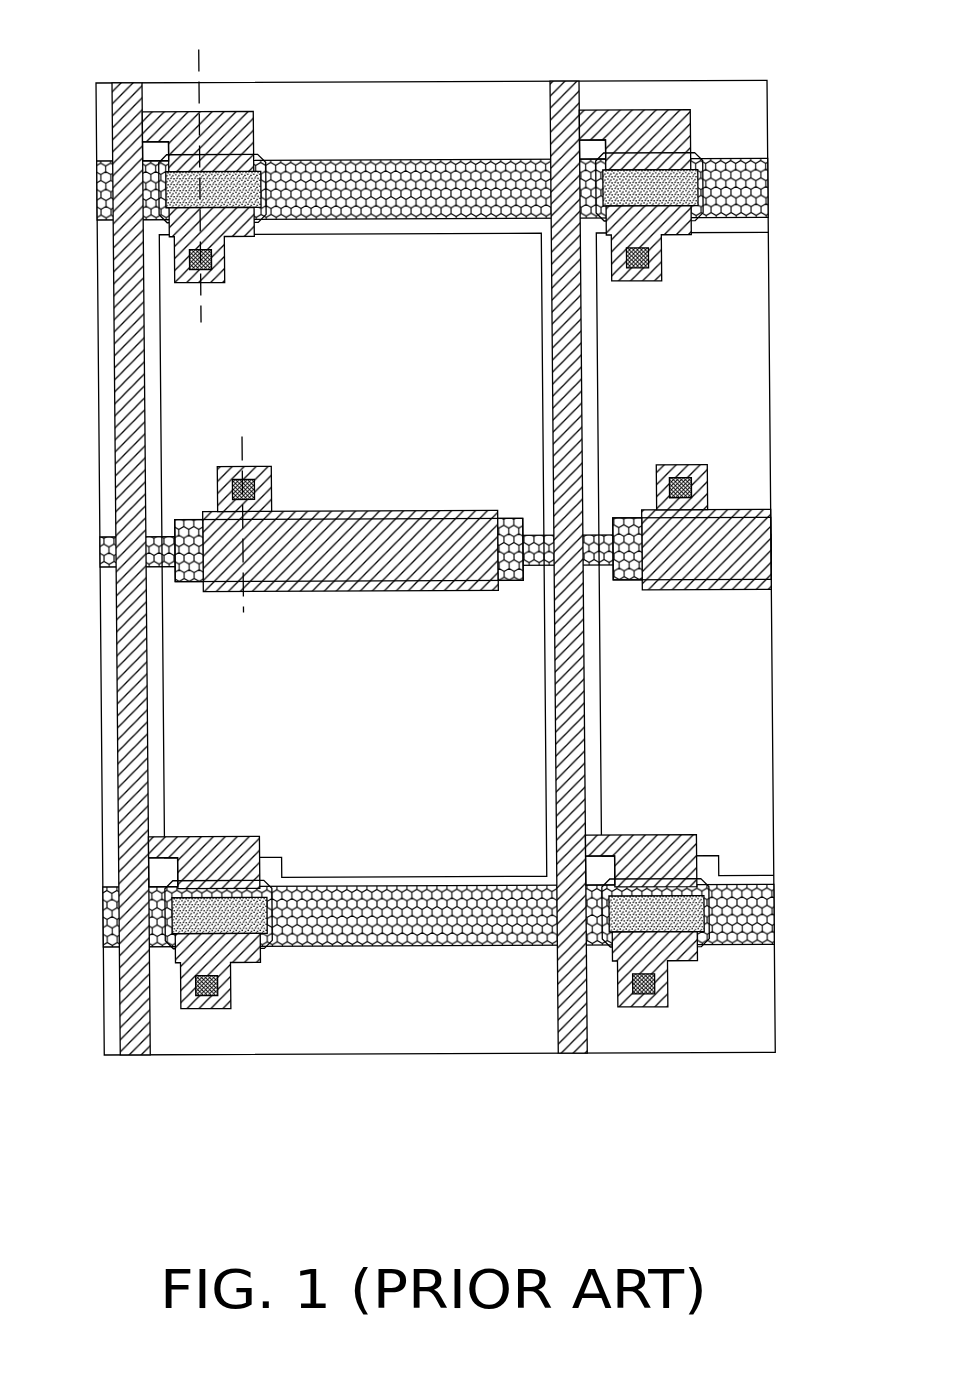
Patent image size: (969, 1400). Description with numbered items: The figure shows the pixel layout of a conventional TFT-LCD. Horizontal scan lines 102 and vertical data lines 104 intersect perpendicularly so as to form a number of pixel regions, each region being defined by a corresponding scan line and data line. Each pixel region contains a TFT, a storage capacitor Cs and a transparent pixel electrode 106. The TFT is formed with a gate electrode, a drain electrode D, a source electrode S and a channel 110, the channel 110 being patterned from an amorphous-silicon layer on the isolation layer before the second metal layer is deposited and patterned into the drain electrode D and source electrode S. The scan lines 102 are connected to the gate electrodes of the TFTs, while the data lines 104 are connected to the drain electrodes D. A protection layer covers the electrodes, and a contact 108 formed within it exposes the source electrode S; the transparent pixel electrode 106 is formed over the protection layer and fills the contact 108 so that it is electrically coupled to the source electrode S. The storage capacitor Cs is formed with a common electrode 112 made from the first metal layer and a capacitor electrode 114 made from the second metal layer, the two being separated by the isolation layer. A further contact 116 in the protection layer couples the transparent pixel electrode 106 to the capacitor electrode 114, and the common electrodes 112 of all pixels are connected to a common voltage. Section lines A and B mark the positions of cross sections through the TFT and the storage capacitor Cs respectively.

The scan line 102 is at (100, 190).
The data line 104 is at (135, 83).
The transparent pixel electrode 106 is at (158, 327).
The contact 108 is at (212, 267).
The channel 110 is at (268, 152).
The common electrode 112 is at (506, 583).
The capacitor electrode 114 is at (367, 598).
The contact 116 is at (251, 482).
The thin film transistor TFT is at (275, 117).
The source electrode S is at (218, 243).
The drain electrode D is at (230, 115).
The storage capacitor Cs is at (751, 503).
The section line A-A' A is at (203, 189).
The section line B-B' B is at (248, 545).